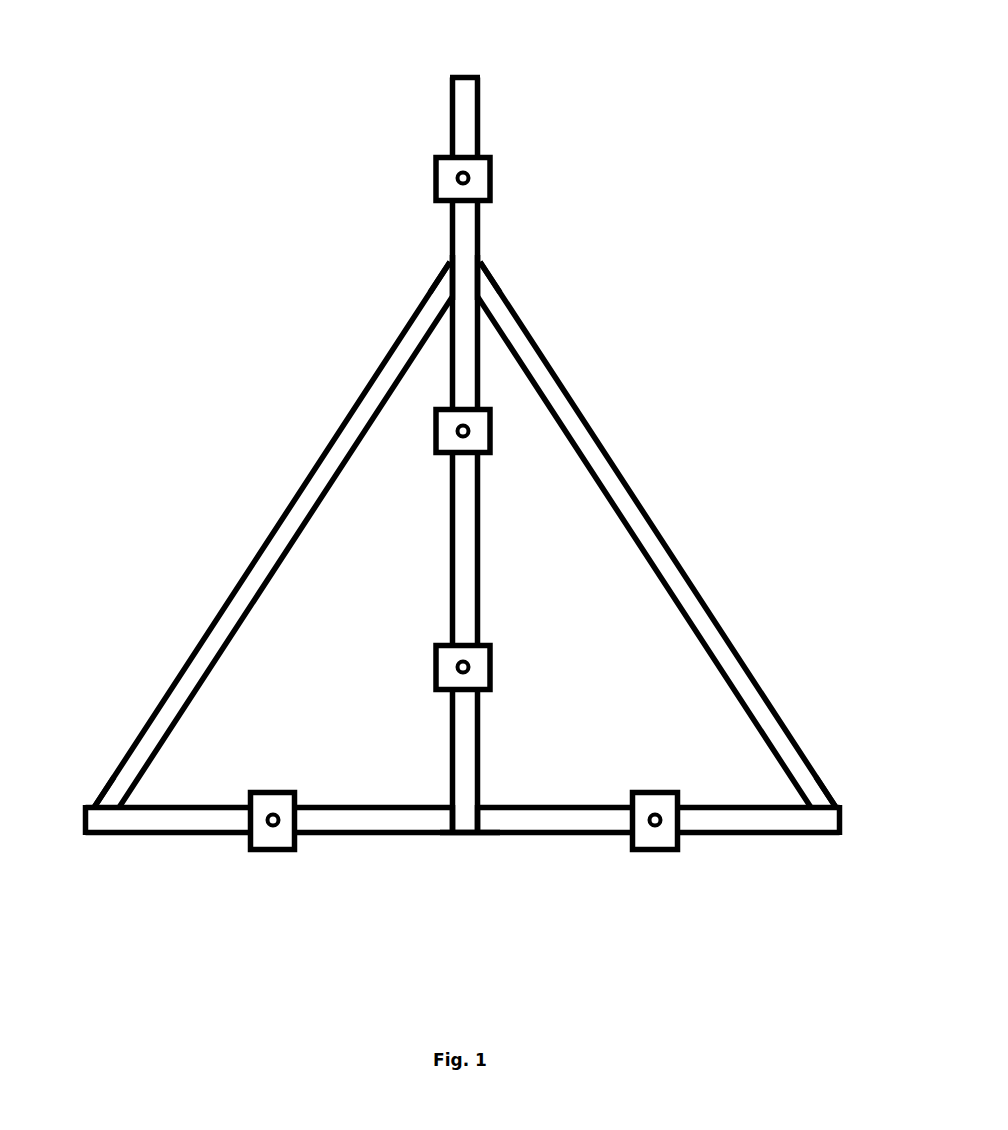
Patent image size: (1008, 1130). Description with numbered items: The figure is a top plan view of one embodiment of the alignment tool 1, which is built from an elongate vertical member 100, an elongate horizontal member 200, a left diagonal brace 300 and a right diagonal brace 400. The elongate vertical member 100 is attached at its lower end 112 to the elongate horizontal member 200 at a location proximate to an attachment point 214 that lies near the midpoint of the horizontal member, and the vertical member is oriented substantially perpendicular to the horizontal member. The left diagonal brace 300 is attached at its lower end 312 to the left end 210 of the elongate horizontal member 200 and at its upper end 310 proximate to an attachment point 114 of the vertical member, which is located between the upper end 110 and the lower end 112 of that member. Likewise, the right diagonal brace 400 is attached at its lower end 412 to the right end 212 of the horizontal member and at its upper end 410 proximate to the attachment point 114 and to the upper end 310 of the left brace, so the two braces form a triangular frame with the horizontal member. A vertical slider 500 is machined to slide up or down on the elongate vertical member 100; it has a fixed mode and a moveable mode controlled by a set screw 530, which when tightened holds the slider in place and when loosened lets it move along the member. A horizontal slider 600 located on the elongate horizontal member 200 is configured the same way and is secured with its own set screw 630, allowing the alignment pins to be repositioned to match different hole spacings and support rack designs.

The alignment tool 1 is at (252, 228).
The elongate vertical member 100 is at (482, 542).
The upper end of the elongate vertical member 110 is at (471, 72).
The lower end of the elongate vertical member 112 is at (452, 838).
The attachment point of the elongate vertical member 114 is at (445, 277).
The elongate horizontal member 200 is at (556, 830).
The left end of the elongate horizontal member 210 is at (84, 822).
The right end of the elongate horizontal member 212 is at (843, 822).
The attachment point of the elongate horizontal member 214 is at (463, 838).
The left diagonal brace 300 is at (288, 492).
The upper end of the left diagonal brace 310 is at (447, 258).
The lower end of the left diagonal brace 312 is at (90, 805).
The right diagonal brace 400 is at (672, 550).
The upper end of the right diagonal brace 410 is at (482, 260).
The lower end of the right diagonal brace 412 is at (840, 805).
The vertical slider 500 is at (434, 160).
The set screw 530 is at (471, 178).
The horizontal slider 600 is at (250, 851).
The set screw 630 is at (291, 849).